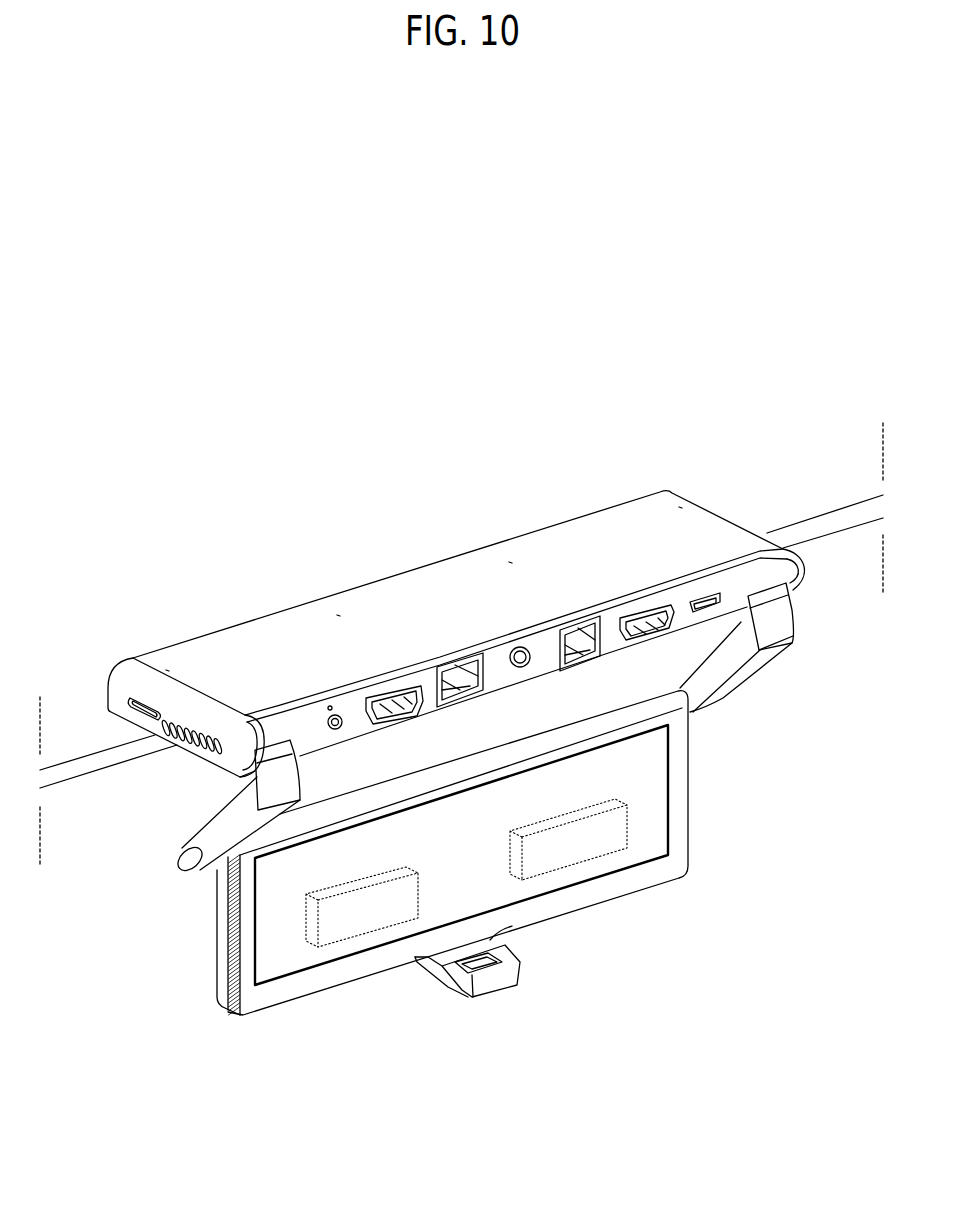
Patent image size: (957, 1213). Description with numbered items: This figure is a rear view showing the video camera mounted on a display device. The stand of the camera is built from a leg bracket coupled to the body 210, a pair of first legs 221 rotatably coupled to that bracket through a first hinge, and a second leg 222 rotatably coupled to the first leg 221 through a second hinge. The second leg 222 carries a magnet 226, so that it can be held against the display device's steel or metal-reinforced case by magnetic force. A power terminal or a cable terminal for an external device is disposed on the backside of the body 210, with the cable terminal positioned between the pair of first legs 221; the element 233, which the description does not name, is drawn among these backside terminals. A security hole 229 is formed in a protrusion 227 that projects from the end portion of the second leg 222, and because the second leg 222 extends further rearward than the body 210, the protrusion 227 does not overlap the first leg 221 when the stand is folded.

The body 210 is at (373, 607).
The connection port 233 is at (572, 637).
The second leg 222 is at (753, 667).
The first leg 221 is at (618, 897).
The magnet 226 is at (613, 832).
The protrusion 227 is at (450, 984).
The security hole 229 is at (480, 990).